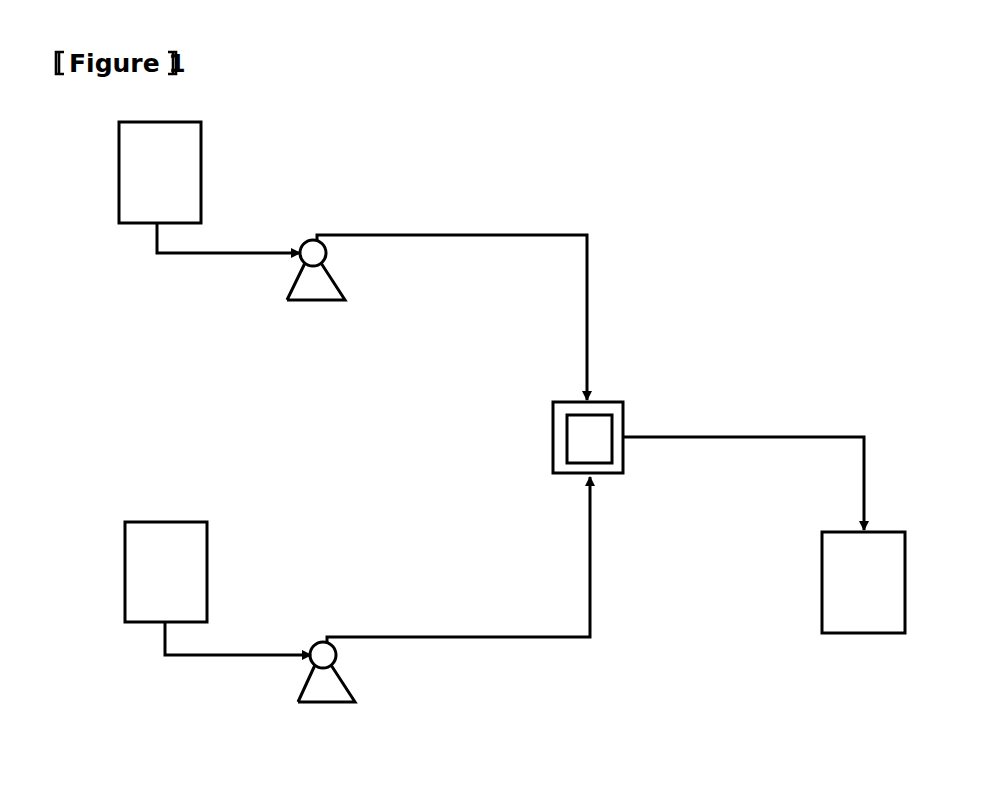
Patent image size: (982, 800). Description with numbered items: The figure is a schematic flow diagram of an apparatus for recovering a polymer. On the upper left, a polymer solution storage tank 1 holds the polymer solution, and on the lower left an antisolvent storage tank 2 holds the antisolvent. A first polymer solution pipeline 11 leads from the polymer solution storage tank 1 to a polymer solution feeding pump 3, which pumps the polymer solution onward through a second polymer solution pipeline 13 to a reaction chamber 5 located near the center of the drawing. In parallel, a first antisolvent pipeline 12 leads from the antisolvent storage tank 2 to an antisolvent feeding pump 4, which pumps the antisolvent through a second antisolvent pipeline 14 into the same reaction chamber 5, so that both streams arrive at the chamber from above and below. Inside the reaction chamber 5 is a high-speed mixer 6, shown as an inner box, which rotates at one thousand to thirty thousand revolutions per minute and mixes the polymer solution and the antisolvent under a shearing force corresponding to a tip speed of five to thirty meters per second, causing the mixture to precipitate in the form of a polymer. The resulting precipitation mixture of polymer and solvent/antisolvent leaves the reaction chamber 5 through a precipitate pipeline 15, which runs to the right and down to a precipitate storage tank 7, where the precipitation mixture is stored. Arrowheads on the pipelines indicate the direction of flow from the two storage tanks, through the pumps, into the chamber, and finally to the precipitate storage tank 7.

The polymer solution storage tank 1 is at (119, 183).
The antisolvent storage tank 2 is at (125, 598).
The polymer solution feeding pump 3 is at (289, 296).
The antisolvent feeding pump 4 is at (302, 693).
The reaction chamber 5 is at (553, 452).
The high-speed mixer 6 is at (612, 450).
The precipitate storage tank 7 is at (822, 600).
The first polymer solution pipeline 11 is at (203, 253).
The first antisolvent pipeline 12 is at (165, 653).
The second polymer solution pipeline 13 is at (587, 272).
The second antisolvent pipeline 14 is at (590, 575).
The precipitate pipeline 15 is at (864, 468).